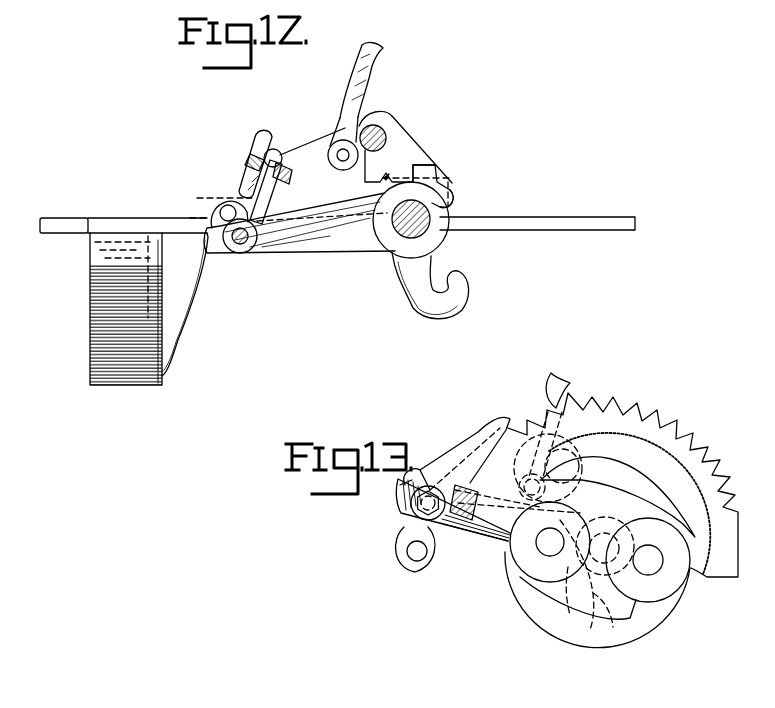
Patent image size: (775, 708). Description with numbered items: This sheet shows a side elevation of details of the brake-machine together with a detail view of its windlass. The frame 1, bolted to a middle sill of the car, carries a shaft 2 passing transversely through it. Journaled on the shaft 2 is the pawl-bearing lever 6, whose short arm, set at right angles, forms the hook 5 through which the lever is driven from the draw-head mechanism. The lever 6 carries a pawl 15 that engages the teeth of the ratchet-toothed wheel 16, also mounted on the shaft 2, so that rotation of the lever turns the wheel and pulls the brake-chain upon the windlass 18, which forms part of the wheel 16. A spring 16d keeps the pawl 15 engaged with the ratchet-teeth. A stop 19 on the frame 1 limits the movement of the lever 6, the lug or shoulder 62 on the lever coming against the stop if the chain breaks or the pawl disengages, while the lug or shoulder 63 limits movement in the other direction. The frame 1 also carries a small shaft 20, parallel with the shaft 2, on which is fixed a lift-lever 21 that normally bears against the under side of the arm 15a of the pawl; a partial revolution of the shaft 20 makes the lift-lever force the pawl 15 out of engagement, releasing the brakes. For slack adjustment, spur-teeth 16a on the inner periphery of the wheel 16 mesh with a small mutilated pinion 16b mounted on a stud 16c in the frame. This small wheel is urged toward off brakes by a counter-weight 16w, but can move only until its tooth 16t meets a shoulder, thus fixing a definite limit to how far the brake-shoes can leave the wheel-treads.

In FIG. 12, the frame 1 is at (160, 268).
In FIG. 12, the shaft 2 is at (418, 228).
In FIG. 12, the hook 5 is at (462, 305).
In FIG. 13, the hook 5 is at (600, 645).
In FIG. 12, the pawl-bearing lever 6 is at (307, 242).
In FIG. 13, the pawl-bearing lever 6 is at (482, 528).
In FIG. 13, the pawl 15 is at (472, 436).
In FIG. 12, the arm of the pawl 15a is at (250, 150).
In FIG. 13, the arm of the pawl 15a is at (395, 488).
In FIG. 13, the ratchet-toothed wheel 16 is at (665, 412).
In FIG. 12, the spur-teeth 16a is at (365, 123).
In FIG. 13, the spur-teeth 16a is at (629, 503).
In FIG. 13, the mutilated spur-gear or pinion 16b is at (577, 478).
In FIG. 12, the stud 16c is at (392, 157).
In FIG. 12, the spring 16d is at (358, 100).
In FIG. 13, the spring 16d is at (566, 397).
In FIG. 12, the tooth 16t is at (358, 122).
In FIG. 12, the counter-weight 16w is at (382, 178).
In FIG. 13, the windlass 18 is at (617, 541).
In FIG. 12, the stop 19 is at (440, 170).
In FIG. 12, the small shaft 20 is at (220, 212).
In FIG. 13, the small shaft 20 is at (407, 552).
In FIG. 12, the lift-lever 21 is at (278, 151).
In FIG. 13, the lift-lever 21 is at (425, 525).
In FIG. 12, the lug or shoulder 62 is at (416, 172).
In FIG. 12, the lug or shoulder 63 is at (456, 194).